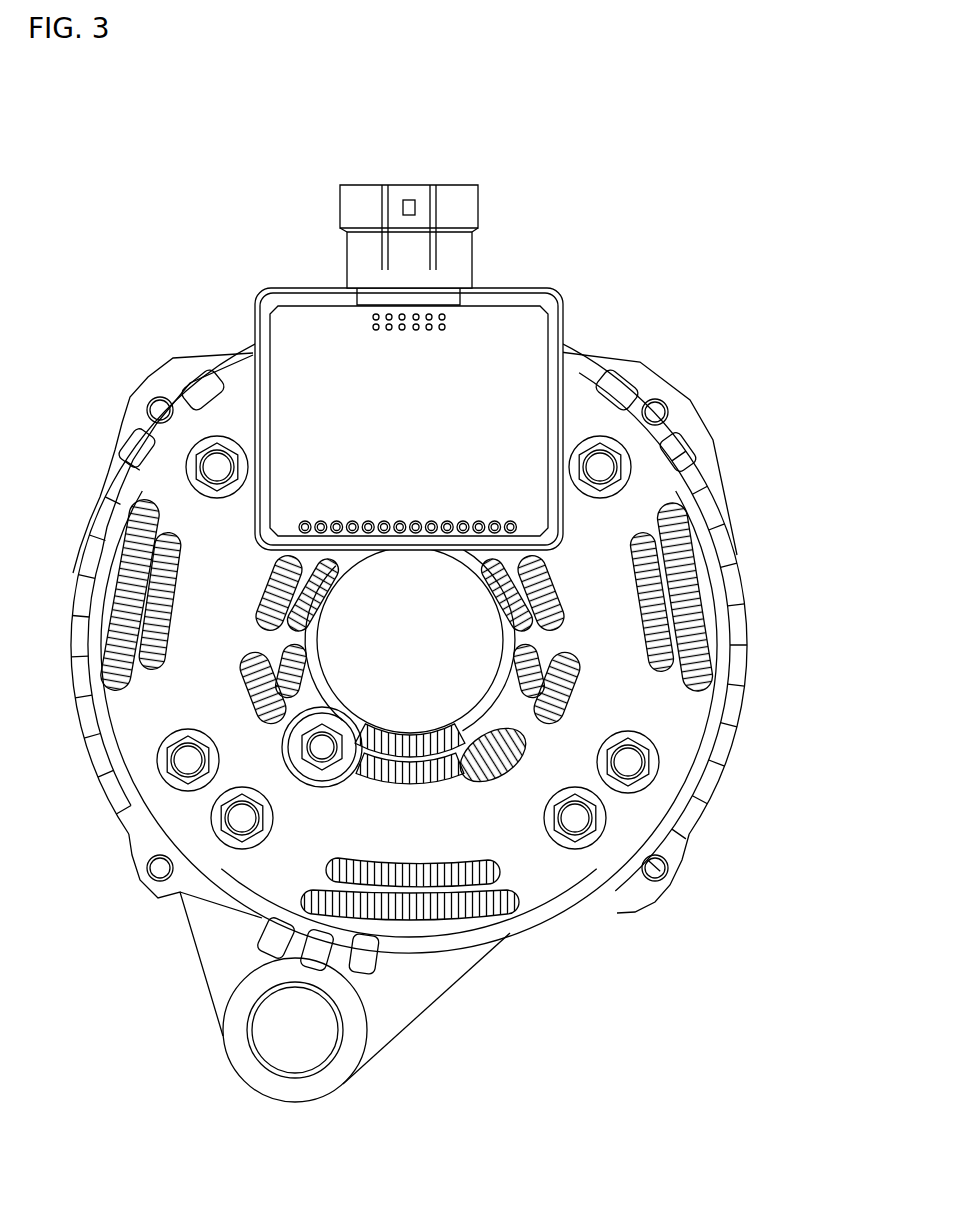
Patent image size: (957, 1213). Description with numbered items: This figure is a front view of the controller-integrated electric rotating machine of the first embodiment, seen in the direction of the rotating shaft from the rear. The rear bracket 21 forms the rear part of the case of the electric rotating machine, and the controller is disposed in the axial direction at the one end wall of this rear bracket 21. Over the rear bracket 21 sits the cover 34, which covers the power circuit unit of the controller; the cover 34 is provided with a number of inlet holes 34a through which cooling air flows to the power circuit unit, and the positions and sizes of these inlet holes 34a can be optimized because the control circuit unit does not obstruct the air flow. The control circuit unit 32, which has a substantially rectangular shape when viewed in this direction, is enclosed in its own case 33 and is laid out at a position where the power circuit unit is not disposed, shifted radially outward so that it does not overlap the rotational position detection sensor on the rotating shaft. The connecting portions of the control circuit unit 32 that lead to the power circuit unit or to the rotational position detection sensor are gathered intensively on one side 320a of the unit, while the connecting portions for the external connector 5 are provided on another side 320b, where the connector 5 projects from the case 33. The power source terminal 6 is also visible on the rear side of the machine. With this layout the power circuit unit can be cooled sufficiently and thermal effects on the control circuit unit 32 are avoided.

The connector 5 is at (482, 202).
The power source terminal 6 is at (300, 753).
The rear bracket 21 is at (713, 460).
The control circuit unit 32 is at (530, 362).
The case 33 is at (530, 290).
The cover 34 is at (712, 512).
The inlet holes 34a is at (293, 588).
The one side of the control circuit unit 320a is at (532, 513).
The another side of the control circuit unit 320b is at (532, 335).